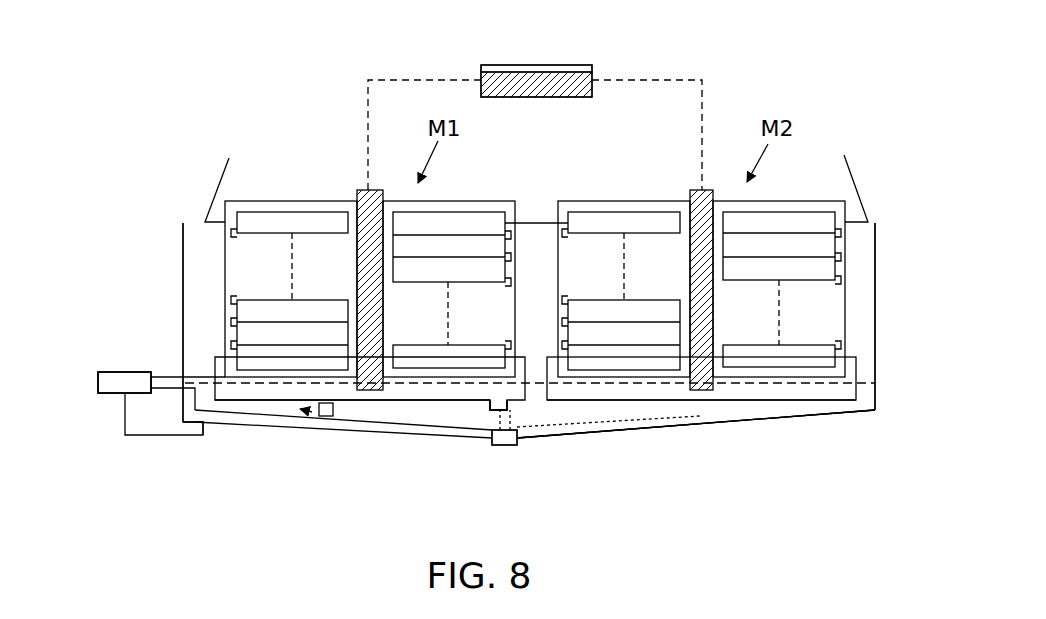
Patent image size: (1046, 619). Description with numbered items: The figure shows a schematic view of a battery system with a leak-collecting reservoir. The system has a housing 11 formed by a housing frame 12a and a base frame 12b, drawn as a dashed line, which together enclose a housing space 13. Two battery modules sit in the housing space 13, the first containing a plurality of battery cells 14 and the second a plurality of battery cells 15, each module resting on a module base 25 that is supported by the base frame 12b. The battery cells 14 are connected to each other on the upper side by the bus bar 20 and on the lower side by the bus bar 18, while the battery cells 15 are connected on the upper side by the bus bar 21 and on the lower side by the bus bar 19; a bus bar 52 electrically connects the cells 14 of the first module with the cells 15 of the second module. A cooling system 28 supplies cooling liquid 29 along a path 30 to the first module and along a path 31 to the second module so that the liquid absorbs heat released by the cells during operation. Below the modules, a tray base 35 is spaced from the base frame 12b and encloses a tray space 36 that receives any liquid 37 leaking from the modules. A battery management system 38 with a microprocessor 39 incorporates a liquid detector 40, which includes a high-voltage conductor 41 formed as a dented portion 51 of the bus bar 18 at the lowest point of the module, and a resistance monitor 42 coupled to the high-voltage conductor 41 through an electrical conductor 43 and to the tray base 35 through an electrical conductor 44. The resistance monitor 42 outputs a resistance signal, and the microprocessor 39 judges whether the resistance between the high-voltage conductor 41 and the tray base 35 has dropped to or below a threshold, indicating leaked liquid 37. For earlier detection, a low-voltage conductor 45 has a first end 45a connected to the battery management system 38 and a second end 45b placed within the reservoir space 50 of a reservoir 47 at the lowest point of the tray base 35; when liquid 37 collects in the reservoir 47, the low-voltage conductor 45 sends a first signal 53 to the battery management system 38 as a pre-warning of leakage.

The housing 11 is at (882, 236).
The housing frame 12a is at (878, 262).
The base frame 12b is at (877, 383).
The housing space 13 is at (181, 281).
The battery cells 14 is at (297, 201).
The battery cells 15 is at (628, 200).
The bus bar 18 is at (413, 402).
The bus bar 19 is at (722, 402).
The bus bar 20 is at (220, 167).
The bus bar 21 is at (852, 166).
The module base 25 is at (253, 387).
The cooling system 28 is at (503, 65).
The cooling liquid 29 is at (366, 190).
The path 30 is at (408, 80).
The path 31 is at (703, 100).
The tray base 35 is at (783, 420).
The tray space 36 is at (636, 433).
The liquid 37 is at (373, 432).
The battery management system 38 is at (103, 370).
The microprocessor 39 is at (98, 380).
The liquid detector 40 is at (165, 336).
The high-voltage conductor 41 is at (486, 408).
The resistance monitor 42 is at (108, 395).
The electrical conductor 43 is at (197, 375).
The electrical conductor 44 is at (125, 425).
The low-voltage conductor 45 is at (290, 421).
The first end 45a is at (165, 392).
The second end 45b is at (503, 447).
The reservoir 47 is at (490, 445).
The reservoir space 50 is at (520, 446).
The portion 51 is at (512, 410).
The bus bar 52 is at (537, 222).
The first signal 53 is at (333, 414).